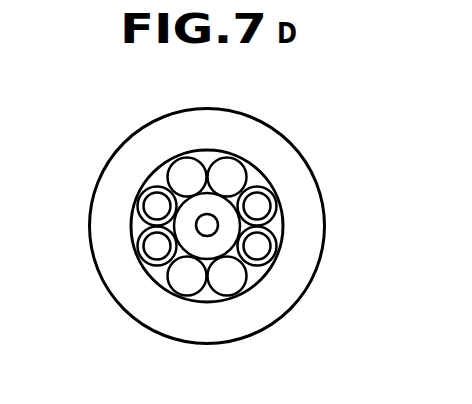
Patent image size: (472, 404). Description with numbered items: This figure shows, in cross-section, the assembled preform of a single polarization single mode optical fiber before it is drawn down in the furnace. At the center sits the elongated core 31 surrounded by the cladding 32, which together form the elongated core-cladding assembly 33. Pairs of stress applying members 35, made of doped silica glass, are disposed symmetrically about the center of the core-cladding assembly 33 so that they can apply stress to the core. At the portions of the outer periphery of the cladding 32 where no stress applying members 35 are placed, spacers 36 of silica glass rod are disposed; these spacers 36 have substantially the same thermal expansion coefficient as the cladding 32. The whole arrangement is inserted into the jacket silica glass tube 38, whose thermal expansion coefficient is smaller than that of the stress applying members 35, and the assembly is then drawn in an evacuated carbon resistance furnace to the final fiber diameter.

The elongated core 31 is at (212, 222).
The cladding 32 is at (227, 217).
The elongated core-cladding assembly 33 is at (273, 175).
The stress applying members 35 is at (262, 205).
The spacers 36 is at (188, 163).
The jacket silica glass tube 38 is at (140, 302).